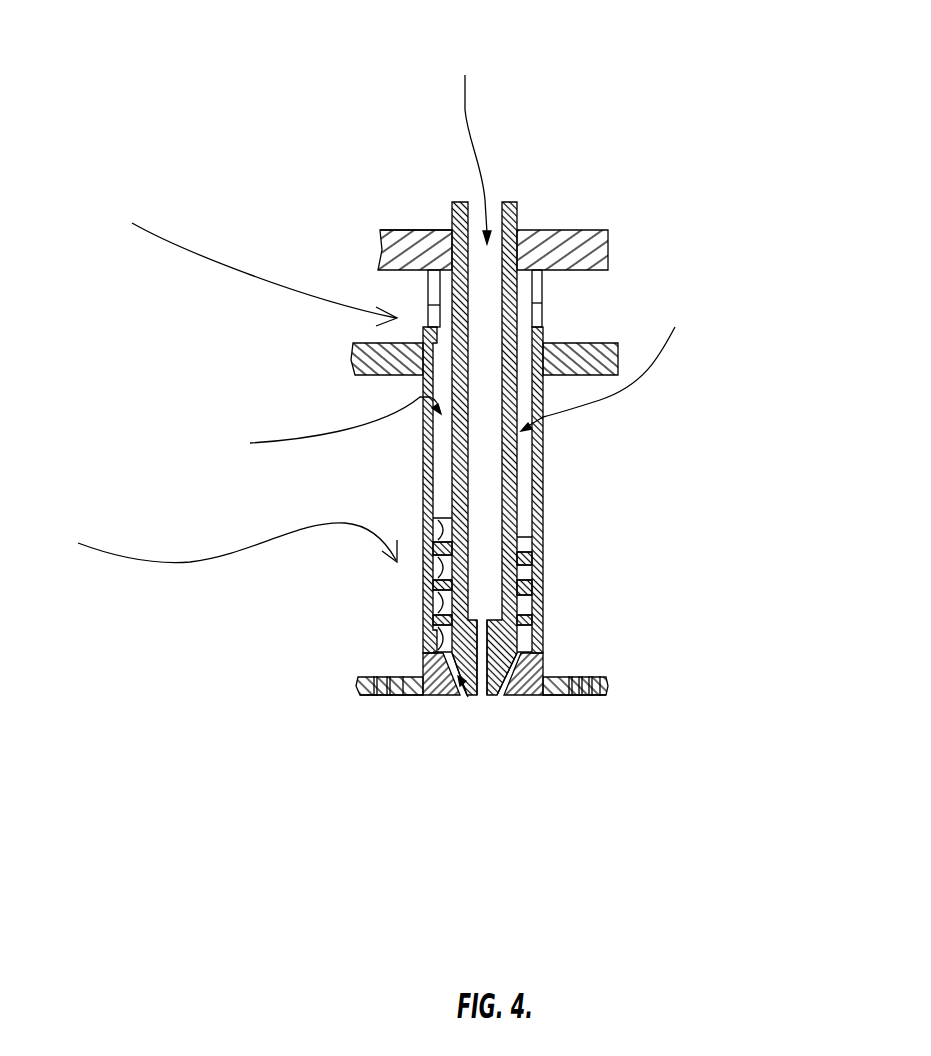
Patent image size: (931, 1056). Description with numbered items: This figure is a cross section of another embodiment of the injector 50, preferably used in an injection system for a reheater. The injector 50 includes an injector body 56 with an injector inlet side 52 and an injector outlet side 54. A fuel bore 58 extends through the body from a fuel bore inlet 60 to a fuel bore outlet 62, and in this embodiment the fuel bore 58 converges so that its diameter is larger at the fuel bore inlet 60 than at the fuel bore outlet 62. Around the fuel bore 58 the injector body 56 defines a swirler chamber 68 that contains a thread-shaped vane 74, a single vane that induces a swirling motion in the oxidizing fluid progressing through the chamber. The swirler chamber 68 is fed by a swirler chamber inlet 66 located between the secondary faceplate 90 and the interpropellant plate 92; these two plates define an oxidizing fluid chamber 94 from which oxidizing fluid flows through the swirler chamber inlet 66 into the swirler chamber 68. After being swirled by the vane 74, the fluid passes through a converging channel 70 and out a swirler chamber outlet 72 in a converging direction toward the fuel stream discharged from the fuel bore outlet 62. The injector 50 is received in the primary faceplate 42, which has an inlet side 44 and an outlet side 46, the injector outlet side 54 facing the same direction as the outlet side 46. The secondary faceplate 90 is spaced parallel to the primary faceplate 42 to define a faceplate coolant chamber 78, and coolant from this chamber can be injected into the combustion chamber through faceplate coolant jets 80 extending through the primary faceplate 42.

The primary faceplate 42 is at (607, 690).
The inlet side 44 is at (600, 675).
The outlet side 46 is at (600, 697).
The injector 50 is at (543, 450).
The injector inlet side 52 is at (512, 203).
The injector outlet side 54 is at (443, 697).
The injector body 56 is at (543, 485).
The fuel bore 58 is at (487, 205).
The fuel bore inlet 60 is at (464, 133).
The fuel bore outlet 62 is at (483, 697).
The swirler chamber inlet 66 is at (425, 302).
The swirler chamber 68 is at (460, 379).
The converging channel 70 is at (468, 697).
The swirler chamber outlet 72 is at (455, 697).
The thread-shaped vane 74 is at (522, 587).
The faceplate coolant chamber 78 is at (205, 540).
The faceplate coolant jets 80 is at (373, 677).
The secondary faceplate 90 is at (368, 343).
The interpropellant plate 92 is at (400, 230).
The oxidizing fluid chamber 94 is at (232, 255).